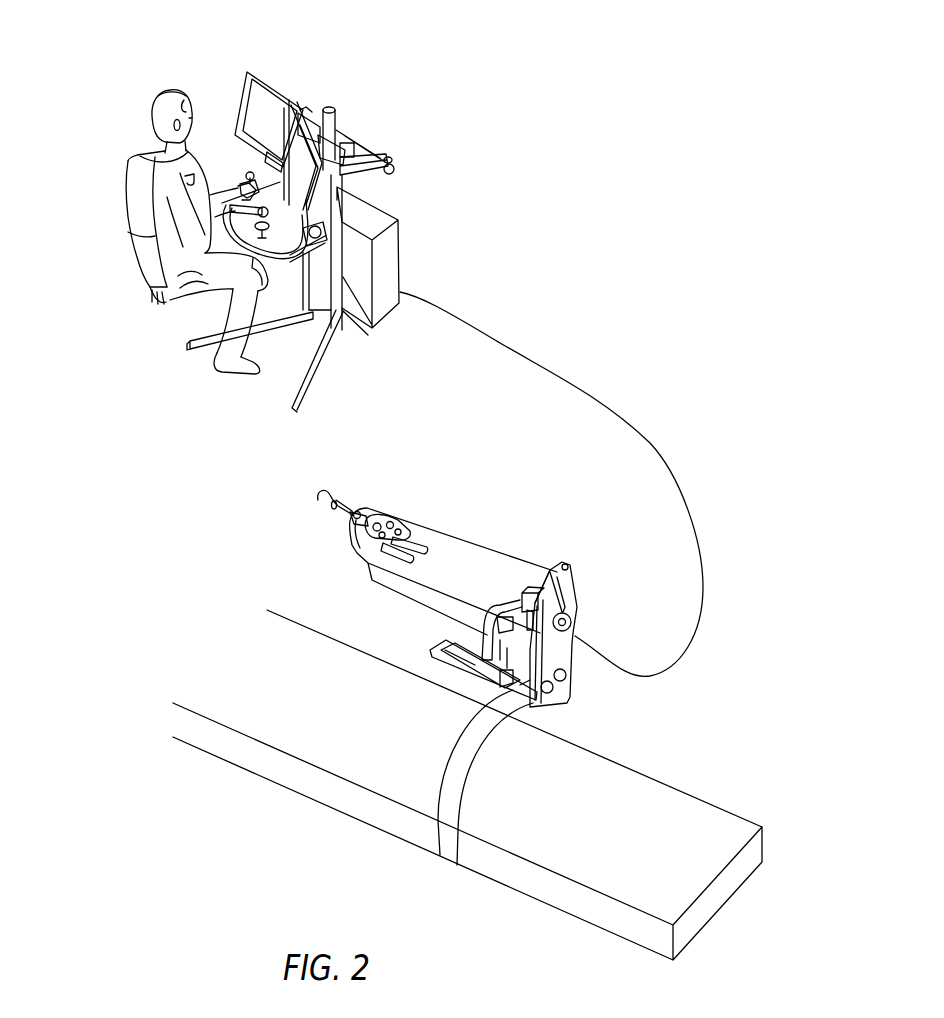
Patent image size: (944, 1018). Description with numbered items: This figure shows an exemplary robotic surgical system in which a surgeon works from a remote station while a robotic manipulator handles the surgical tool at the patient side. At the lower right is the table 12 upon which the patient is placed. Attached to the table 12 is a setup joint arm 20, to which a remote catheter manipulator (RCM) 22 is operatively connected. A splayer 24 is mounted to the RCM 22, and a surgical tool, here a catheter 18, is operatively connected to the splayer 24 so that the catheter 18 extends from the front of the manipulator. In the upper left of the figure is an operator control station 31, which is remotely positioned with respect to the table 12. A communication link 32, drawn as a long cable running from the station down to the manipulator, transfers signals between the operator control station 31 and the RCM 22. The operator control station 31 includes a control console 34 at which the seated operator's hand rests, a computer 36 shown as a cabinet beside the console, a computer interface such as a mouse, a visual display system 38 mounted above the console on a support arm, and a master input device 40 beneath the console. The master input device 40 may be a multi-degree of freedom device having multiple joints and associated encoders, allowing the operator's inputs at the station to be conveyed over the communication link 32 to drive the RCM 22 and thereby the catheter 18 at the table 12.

The table 12 is at (657, 777).
The catheter 18 is at (346, 496).
The setup joint arm 20 is at (429, 857).
The remote catheter manipulator (RCM) 22 is at (447, 576).
The splayer 24 is at (168, 80).
The operator control station 31 is at (335, 228).
The communication link 32 is at (603, 399).
The control console 34 is at (234, 177).
The computer 36 is at (381, 214).
The visual display system 38 is at (290, 85).
The master input device 40 is at (262, 225).